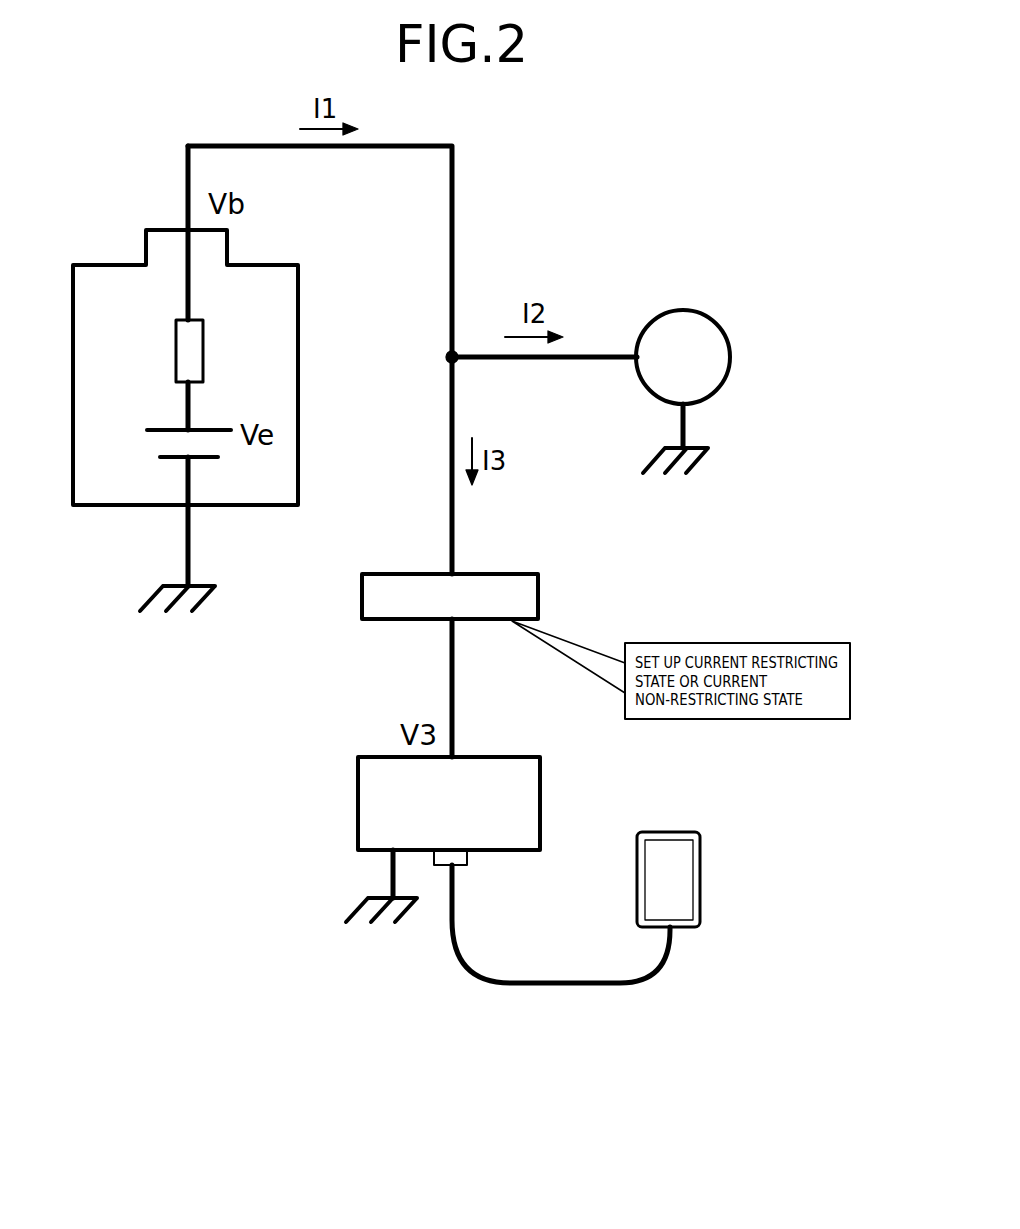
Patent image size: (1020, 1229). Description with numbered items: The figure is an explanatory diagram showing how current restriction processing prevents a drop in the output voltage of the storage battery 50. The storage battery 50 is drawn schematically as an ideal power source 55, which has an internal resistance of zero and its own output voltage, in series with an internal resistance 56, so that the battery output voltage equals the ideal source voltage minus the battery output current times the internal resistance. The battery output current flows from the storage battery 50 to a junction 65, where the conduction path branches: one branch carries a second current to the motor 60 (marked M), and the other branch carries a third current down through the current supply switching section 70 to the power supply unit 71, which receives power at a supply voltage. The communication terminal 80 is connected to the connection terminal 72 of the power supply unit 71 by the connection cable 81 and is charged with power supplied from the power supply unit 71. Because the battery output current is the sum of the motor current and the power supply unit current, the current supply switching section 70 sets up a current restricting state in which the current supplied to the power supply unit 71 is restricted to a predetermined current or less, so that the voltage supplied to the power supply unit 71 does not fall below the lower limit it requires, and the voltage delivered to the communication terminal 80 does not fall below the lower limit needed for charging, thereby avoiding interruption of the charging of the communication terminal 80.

The storage battery 50 is at (97, 265).
The ideal power source 55 is at (160, 430).
The internal resistance 56 is at (176, 348).
The motor 60 is at (679, 310).
The branch point 65 is at (452, 357).
The current supply switching section 70 is at (540, 601).
The power supply unit 71 is at (490, 757).
The connection terminal 72 is at (468, 866).
The communication terminal 80 is at (666, 832).
The connection cable 81 is at (570, 985).